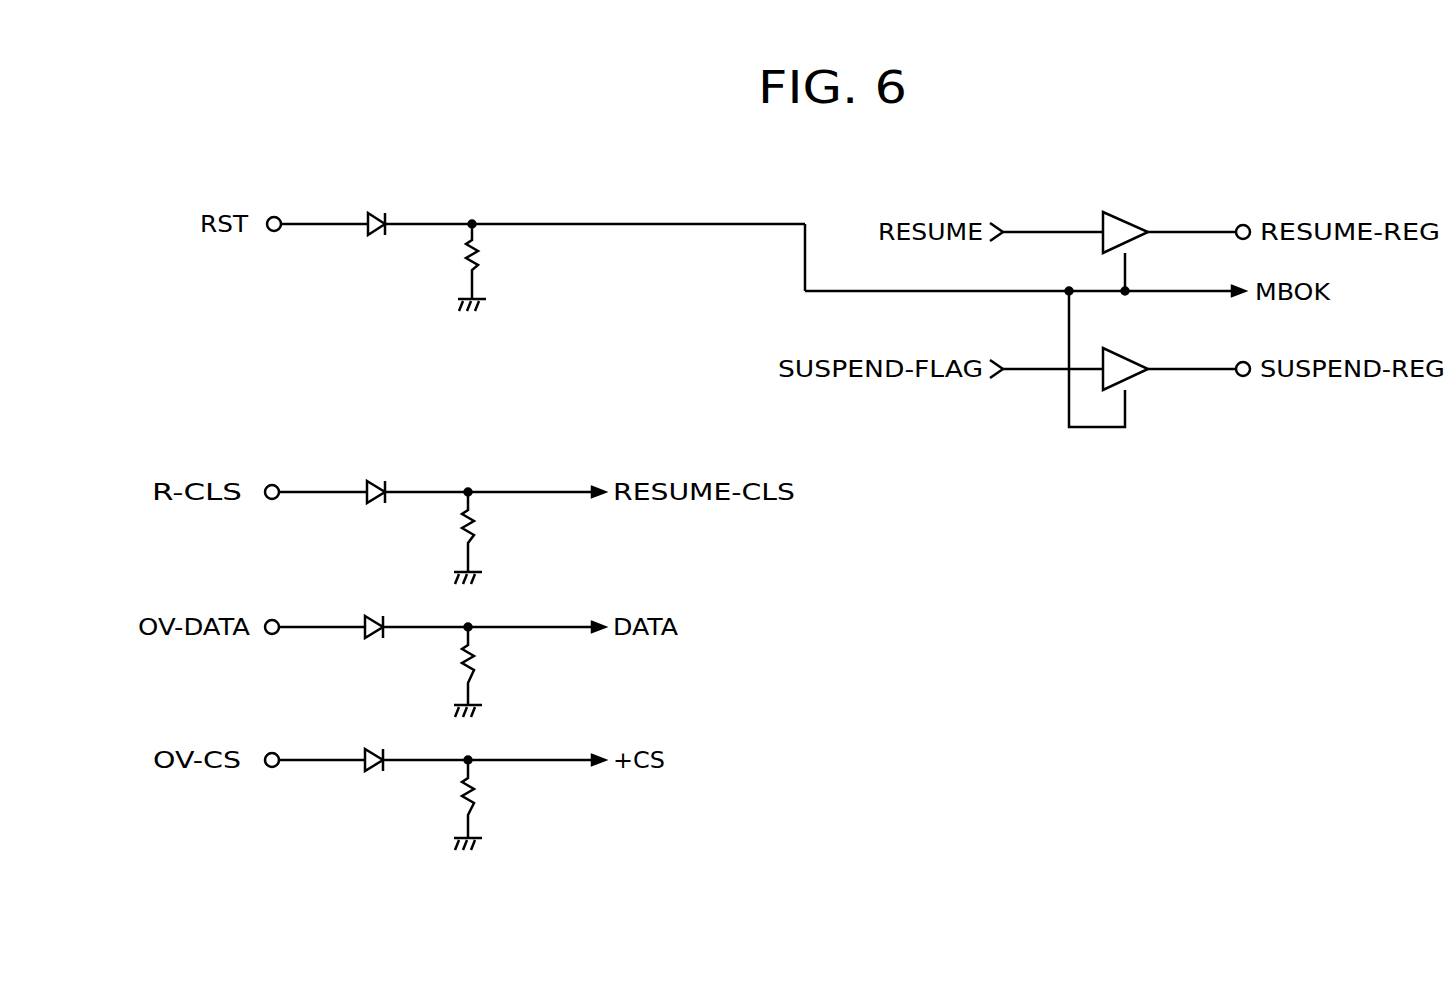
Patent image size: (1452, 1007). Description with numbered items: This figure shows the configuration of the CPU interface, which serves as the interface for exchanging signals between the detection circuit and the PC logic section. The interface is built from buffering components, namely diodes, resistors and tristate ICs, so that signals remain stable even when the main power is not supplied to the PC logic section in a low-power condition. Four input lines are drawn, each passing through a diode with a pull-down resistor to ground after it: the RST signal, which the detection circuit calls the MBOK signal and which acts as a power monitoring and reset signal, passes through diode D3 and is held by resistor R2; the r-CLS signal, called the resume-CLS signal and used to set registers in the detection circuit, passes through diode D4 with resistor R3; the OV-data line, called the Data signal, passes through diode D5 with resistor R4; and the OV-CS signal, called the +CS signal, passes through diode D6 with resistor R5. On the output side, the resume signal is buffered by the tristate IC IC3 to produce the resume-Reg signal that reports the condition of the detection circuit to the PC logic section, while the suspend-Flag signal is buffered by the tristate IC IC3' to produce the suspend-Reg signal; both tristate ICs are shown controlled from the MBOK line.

The diode D3 is at (378, 216).
The resistor R2 is at (478, 262).
The tristate IC IC3 is at (1152, 207).
The tristate IC IC3' is at (1159, 353).
The diode D4 is at (372, 484).
The resistor R3 is at (475, 532).
The diode D5 is at (368, 618).
The resistor R4 is at (475, 662).
The diode D6 is at (367, 750).
The resistor R5 is at (473, 796).